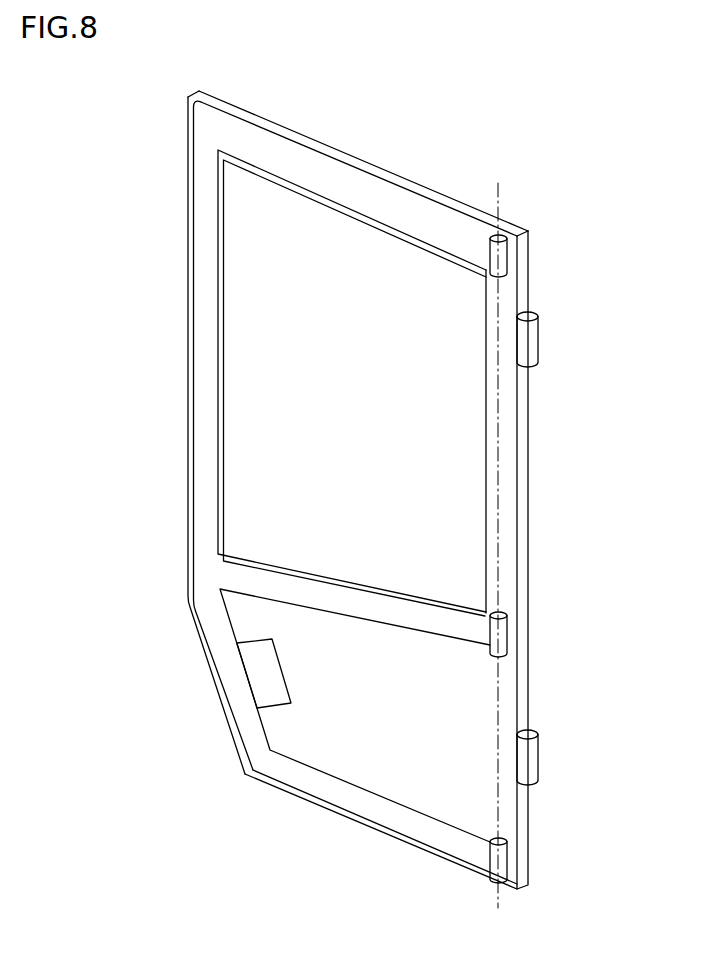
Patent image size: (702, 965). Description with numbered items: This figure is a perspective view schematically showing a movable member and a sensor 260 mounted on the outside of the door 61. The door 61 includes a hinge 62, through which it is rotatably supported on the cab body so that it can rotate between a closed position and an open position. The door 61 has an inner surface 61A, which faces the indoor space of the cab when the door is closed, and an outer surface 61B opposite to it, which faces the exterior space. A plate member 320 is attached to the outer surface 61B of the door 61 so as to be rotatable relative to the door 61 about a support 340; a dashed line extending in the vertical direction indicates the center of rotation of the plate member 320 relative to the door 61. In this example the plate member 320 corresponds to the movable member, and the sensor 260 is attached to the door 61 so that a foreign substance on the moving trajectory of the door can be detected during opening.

The door 61 is at (508, 294).
The inner surface 61A is at (241, 107).
The outer surface 61B is at (186, 106).
The plate member 320 is at (207, 262).
The support 340 is at (498, 257).
The hinge 62 is at (528, 342).
The sensor 260 is at (262, 675).